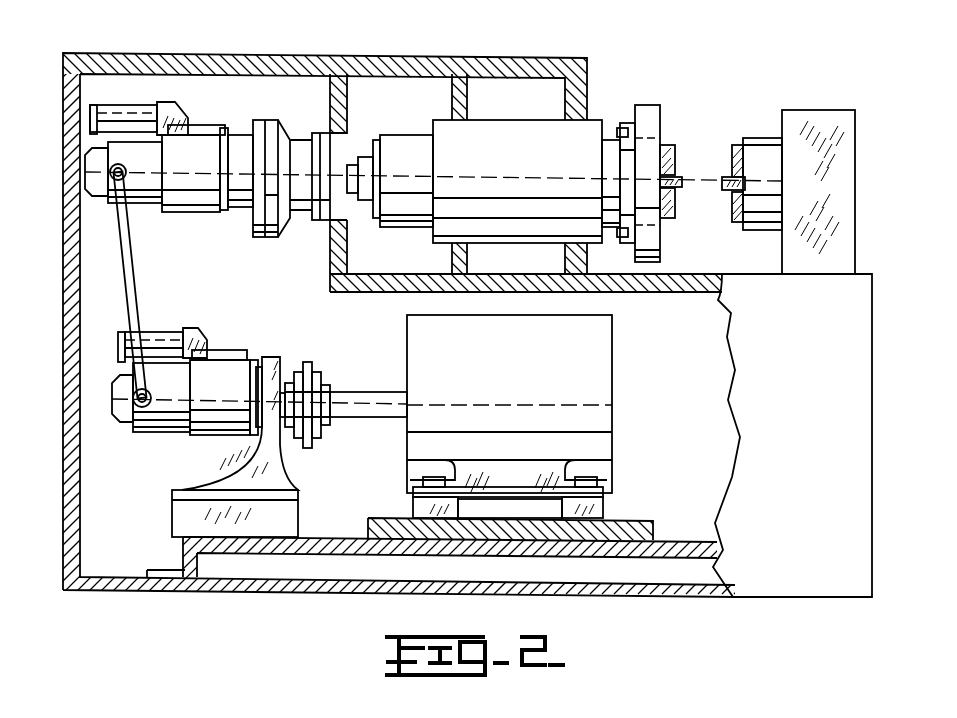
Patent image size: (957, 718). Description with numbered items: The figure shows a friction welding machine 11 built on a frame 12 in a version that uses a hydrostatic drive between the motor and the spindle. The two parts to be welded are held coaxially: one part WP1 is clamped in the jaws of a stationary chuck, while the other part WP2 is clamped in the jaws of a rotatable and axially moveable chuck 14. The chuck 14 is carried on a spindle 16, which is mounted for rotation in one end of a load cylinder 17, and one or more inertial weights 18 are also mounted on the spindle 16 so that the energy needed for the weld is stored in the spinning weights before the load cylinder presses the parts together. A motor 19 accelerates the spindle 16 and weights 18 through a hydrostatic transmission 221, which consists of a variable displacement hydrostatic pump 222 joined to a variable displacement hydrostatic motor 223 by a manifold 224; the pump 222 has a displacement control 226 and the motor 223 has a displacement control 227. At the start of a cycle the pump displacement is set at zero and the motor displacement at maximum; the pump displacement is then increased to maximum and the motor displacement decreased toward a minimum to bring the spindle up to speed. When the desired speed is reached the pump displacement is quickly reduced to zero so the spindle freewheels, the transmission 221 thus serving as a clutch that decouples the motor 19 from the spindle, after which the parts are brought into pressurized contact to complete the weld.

The welding machine 11 is at (680, 48).
The frame 12 is at (714, 310).
The rotatable and axially moveable chuck 14 is at (662, 143).
The spindle 16 is at (613, 138).
The load cylinder 17 is at (493, 124).
The inertial weights 18 is at (652, 118).
The motor 19 is at (407, 468).
The hydrostatic transmission 221 is at (268, 100).
The variable displacement hydrostatic pump 222 is at (220, 438).
The variable displacement hydrostatic motor 223 is at (174, 211).
The manifold 224 is at (137, 271).
The displacement control 226 is at (204, 341).
The displacement control 227 is at (105, 108).
The part to be welded WP1 is at (690, 176).
The part to be welded WP2 is at (684, 188).